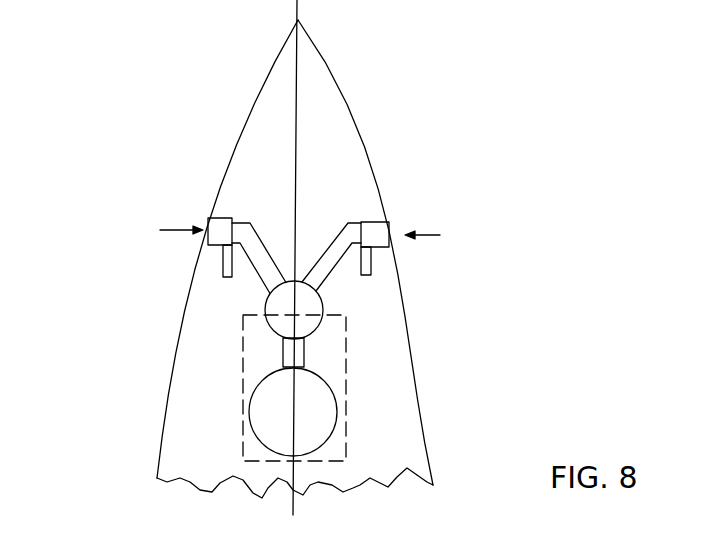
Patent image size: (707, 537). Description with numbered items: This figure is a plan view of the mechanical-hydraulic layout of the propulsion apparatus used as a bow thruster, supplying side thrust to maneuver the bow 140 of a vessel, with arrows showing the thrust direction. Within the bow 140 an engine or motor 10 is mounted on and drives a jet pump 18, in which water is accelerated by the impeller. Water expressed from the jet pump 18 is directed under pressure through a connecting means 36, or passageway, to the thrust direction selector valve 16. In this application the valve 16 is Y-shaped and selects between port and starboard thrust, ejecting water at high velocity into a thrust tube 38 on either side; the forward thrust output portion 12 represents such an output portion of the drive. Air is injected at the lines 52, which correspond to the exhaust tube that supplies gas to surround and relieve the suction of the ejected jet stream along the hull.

The bow 140 is at (343, 93).
The thrust tube 38 is at (249, 222).
The forward thrust output portion 12 is at (214, 218).
The exhaust tube 52 is at (223, 263).
The thrust direction selector valve 16 is at (321, 299).
The engine or motor 10 is at (346, 348).
The connecting means 36 is at (304, 352).
The jet pump 18 is at (338, 409).